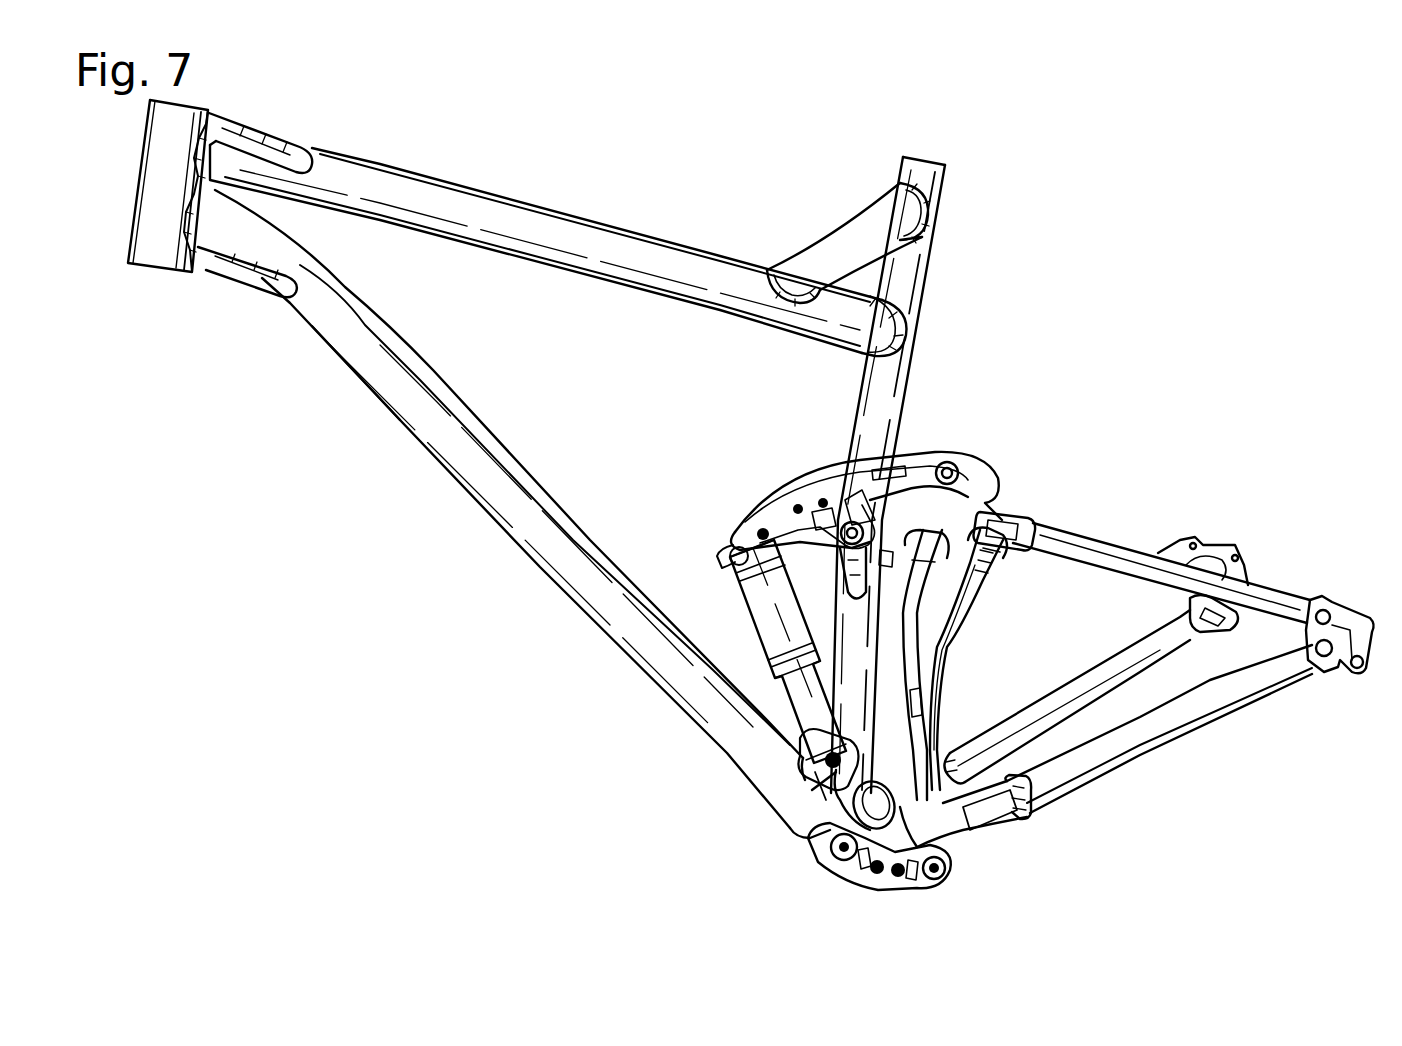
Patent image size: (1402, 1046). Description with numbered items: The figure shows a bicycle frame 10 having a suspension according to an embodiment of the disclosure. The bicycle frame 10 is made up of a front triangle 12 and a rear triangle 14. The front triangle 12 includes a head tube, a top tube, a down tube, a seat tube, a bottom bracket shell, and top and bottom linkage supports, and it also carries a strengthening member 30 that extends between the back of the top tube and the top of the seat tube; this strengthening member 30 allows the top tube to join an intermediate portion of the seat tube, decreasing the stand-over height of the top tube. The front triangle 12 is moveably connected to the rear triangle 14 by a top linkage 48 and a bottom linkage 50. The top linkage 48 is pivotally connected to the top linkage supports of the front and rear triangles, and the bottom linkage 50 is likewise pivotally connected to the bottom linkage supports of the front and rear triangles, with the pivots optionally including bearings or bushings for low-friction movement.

The bicycle frame 10 is at (496, 100).
The front triangle 12 is at (572, 196).
The rear triangle 14 is at (1107, 516).
The strengthening member 30 is at (848, 244).
The top linkage 48 is at (802, 470).
The bottom linkage 50 is at (850, 882).